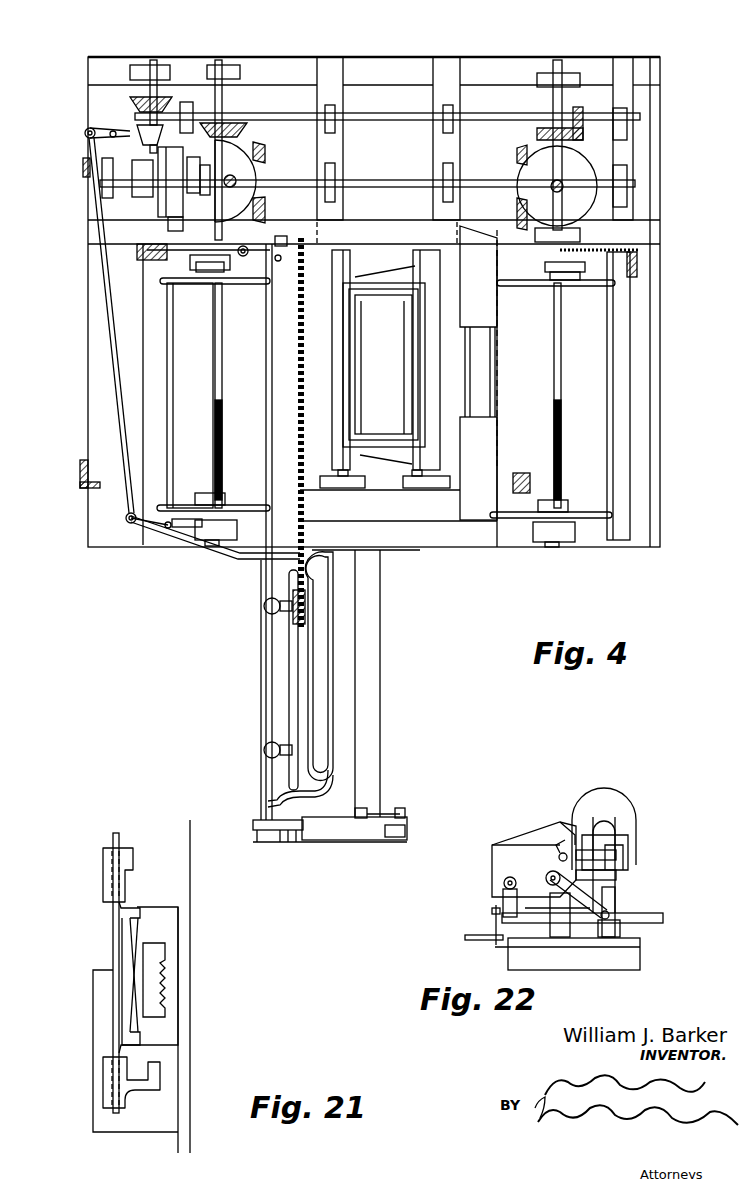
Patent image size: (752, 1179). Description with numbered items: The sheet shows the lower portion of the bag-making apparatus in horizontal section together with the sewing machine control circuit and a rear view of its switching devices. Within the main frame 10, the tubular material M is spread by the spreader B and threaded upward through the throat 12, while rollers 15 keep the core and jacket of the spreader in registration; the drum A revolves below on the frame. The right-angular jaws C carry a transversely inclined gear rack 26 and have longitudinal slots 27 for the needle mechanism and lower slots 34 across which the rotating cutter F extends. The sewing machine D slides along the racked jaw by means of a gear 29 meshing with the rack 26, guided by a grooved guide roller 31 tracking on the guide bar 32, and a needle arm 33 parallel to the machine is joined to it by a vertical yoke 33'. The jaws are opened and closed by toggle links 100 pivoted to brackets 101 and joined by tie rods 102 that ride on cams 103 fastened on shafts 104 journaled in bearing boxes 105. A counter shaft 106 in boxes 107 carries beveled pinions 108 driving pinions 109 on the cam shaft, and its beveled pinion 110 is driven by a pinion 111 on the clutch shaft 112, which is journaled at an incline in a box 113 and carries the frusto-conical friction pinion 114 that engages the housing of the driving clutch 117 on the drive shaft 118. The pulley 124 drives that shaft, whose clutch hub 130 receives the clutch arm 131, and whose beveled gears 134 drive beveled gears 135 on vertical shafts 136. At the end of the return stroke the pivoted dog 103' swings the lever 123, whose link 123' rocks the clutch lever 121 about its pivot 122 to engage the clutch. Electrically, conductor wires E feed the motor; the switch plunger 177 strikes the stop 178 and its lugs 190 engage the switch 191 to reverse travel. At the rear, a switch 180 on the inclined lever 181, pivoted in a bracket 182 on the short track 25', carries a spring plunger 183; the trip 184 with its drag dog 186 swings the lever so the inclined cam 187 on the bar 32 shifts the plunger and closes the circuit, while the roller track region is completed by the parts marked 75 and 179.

In FIG. 4, the main frame 10 is at (372, 72).
In FIG. 4, the throat 12 is at (406, 331).
In FIG. 4, the rollers 15 is at (412, 271).
In FIG. 4, the gear rack 26 is at (302, 315).
In FIG. 22, the gear rack 26 is at (575, 823).
In FIG. 22, the longitudinal slots 27 is at (623, 851).
In FIG. 4, the gear 29 is at (293, 616).
In FIG. 4, the guide roller 31 is at (262, 607).
In FIG. 4, the guide bar 32 is at (264, 395).
In FIG. 4, the needle arm 33 is at (357, 683).
In FIG. 22, the needle arm 33 is at (631, 852).
In FIG. 4, the vertical yoke 33' is at (345, 788).
In FIG. 22, the vertical yoke 33' is at (611, 822).
In FIG. 22, the longitudinal slots 34 is at (616, 901).
In FIG. 4, the pivot 75 is at (237, 260).
In FIG. 4, the toggle links 100 is at (190, 293).
In FIG. 4, the brackets 101 is at (147, 411).
In FIG. 4, the tie rod 102 is at (220, 354).
In FIG. 4, the cams 103 is at (383, 387).
In FIG. 22, the pivoted dog 103' is at (470, 924).
In FIG. 4, the shafts 104 is at (215, 437).
In FIG. 4, the bearing boxes 105 is at (580, 238).
In FIG. 4, the counter shaft 106 is at (406, 120).
In FIG. 4, the boxes 107 is at (630, 119).
In FIG. 4, the beveled pinions 108 is at (588, 110).
In FIG. 4, the pinions 109 is at (538, 135).
In FIG. 4, the beveled pinion 110 is at (189, 86).
In FIG. 4, the pinion 111 is at (130, 105).
In FIG. 4, the clutch shaft 112 is at (152, 63).
In FIG. 4, the box 113 is at (198, 132).
In FIG. 4, the friction pinion 114 is at (140, 142).
In FIG. 4, the driving clutch 117 is at (168, 229).
In FIG. 4, the drive shaft 118 is at (368, 187).
In FIG. 4, the clutch lever 121 is at (84, 136).
In FIG. 4, the pivot 122 is at (108, 138).
In FIG. 4, the lever 123 is at (213, 551).
In FIG. 22, the lever 123 is at (471, 948).
In FIG. 4, the link 123' is at (79, 325).
In FIG. 4, the pulley 124 is at (145, 191).
In FIG. 4, the clutch hub 130 is at (235, 181).
In FIG. 4, the clutch arm 131 is at (227, 181).
In FIG. 4, the beveled gears 134 is at (260, 211).
In FIG. 4, the beveled gears 135 is at (256, 152).
In FIG. 4, the vertical shafts 136 is at (566, 181).
In FIG. 4, the switch plunger 177 is at (261, 807).
In FIG. 21, the switch plunger 177 is at (113, 951).
In FIG. 4, the stop 178 is at (284, 253).
In FIG. 4, the block 179 is at (372, 840).
In FIG. 22, the block 179 is at (548, 926).
In FIG. 22, the switch 180 is at (558, 857).
In FIG. 22, the lever 181 is at (568, 921).
In FIG. 22, the bracket 182 is at (622, 931).
In FIG. 22, the spring plunger 183 is at (504, 880).
In FIG. 22, the trip 184 is at (540, 836).
In FIG. 22, the drag dog 186 is at (552, 885).
In FIG. 4, the inclined cam 187 is at (271, 850).
In FIG. 21, the lugs 190 is at (133, 902).
In FIG. 21, the switch 191 is at (145, 923).
In FIG. 22, the short track 25' is at (567, 967).
In FIG. 4, the drum A is at (493, 375).
In FIG. 4, the spreader B is at (408, 411).
In FIG. 4, the jaws C is at (497, 333).
In FIG. 22, the jaws C is at (665, 919).
In FIG. 4, the sewing machine D is at (280, 684).
In FIG. 21, the sewing machine D is at (103, 877).
In FIG. 22, the sewing machine D is at (505, 844).
In FIG. 21, the conductor wires E is at (190, 1118).
In FIG. 22, the rotating cutter F is at (616, 883).
In FIG. 4, the tubular material M is at (388, 385).